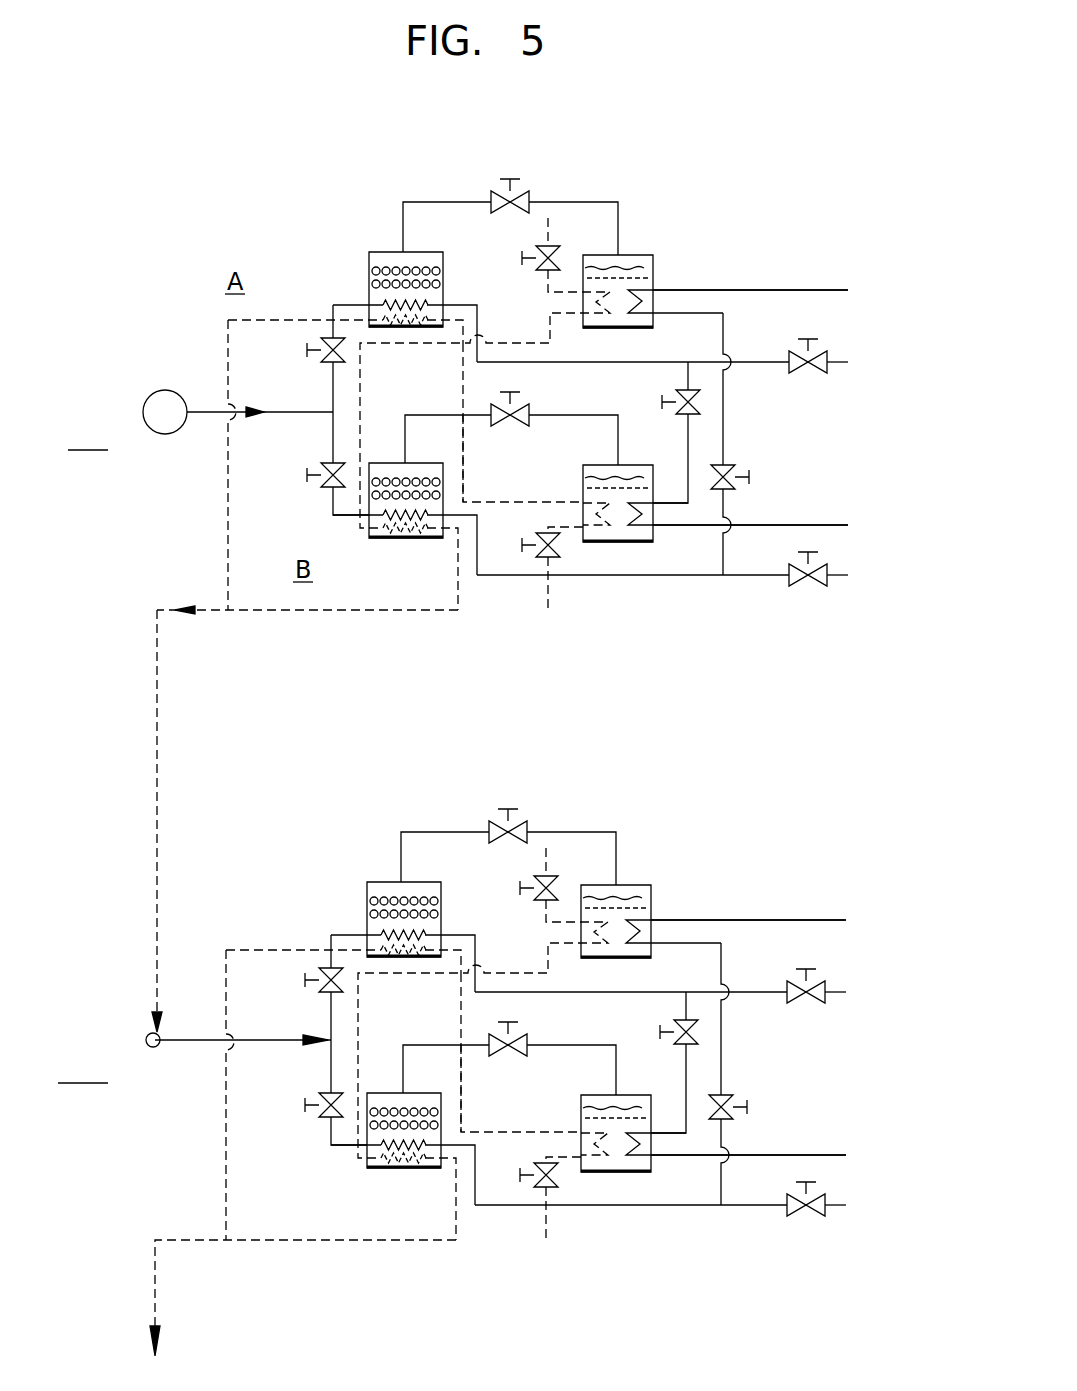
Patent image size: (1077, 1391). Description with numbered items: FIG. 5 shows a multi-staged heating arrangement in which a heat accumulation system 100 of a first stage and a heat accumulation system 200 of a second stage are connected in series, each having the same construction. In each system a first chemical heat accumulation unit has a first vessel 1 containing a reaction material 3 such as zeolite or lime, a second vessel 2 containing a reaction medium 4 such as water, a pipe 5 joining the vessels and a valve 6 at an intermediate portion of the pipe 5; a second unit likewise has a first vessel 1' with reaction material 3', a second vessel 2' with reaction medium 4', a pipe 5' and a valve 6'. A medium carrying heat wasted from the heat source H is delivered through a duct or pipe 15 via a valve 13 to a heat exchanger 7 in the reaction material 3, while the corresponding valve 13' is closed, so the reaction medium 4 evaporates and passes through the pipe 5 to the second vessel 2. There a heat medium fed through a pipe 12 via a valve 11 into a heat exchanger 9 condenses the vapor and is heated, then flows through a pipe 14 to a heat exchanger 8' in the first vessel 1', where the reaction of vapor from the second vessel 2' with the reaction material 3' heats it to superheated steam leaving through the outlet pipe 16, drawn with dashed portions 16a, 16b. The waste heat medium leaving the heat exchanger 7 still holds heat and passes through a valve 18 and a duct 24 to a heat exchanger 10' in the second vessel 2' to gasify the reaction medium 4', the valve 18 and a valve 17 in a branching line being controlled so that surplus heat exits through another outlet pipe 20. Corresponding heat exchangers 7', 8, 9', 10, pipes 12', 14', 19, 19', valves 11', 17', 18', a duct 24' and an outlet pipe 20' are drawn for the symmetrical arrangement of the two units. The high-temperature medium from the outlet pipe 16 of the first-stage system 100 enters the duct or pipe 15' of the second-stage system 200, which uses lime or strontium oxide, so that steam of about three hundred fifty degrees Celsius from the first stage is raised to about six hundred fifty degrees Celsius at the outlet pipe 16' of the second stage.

The first vessel 1 is at (391, 570).
The reaction material 3 is at (371, 576).
The heat exchanger 7 is at (390, 320).
The cooling coil 8 is at (404, 348).
The pipe 5 is at (505, 198).
The valve 6 is at (497, 176).
The second vessel 2 is at (625, 580).
The reaction medium 4 is at (647, 575).
The heat exchanger coil 10 is at (738, 328).
The outlet pipe 19 is at (750, 270).
The valve 11 is at (509, 251).
The pipe 12 is at (574, 235).
The heat exchanger 9 is at (485, 399).
The pipe 14 is at (405, 396).
The valve 13 is at (313, 410).
The valve 13' is at (298, 477).
The valve 18 is at (660, 432).
The valve 18' is at (765, 472).
The connecting pipe 24' is at (757, 389).
The duct 24 is at (756, 498).
The valve 17 is at (674, 374).
The outlet pipe 20 is at (849, 342).
The first vessel 1' is at (402, 785).
The reaction material 3' is at (405, 780).
The heating coil 7' is at (405, 553).
The heat exchanger 8' is at (420, 566).
The pipe 5' is at (511, 422).
The valve 6' is at (503, 431).
The second vessel 2' is at (617, 802).
The reaction medium 4' is at (630, 786).
The heat exchanger 10' is at (738, 540).
The outlet pipe 19' is at (760, 504).
The valve 11' is at (518, 540).
The line 12' is at (576, 594).
The cooling coil 9' is at (580, 539).
The heat transfer loop 14' is at (514, 458).
The valve 17' is at (652, 591).
The outlet pipe 20' is at (847, 603).
The return branch line 16a is at (228, 525).
The return branch line 16b is at (271, 612).
The outlet pipe 16 is at (185, 821).
The duct or pipe 15 is at (260, 428).
The heat source H is at (167, 392).
The outlet pipe 16' is at (303, 1298).
The duct or pipe 15' is at (238, 1012).
The heat accumulation system 100 is at (94, 436).
The heat accumulation system 200 is at (84, 1069).